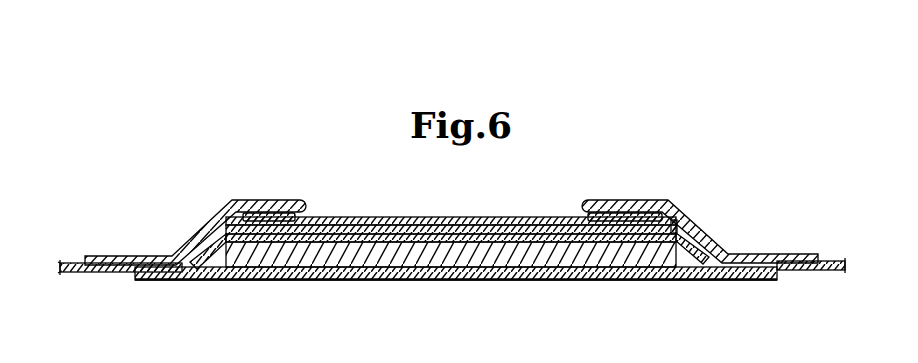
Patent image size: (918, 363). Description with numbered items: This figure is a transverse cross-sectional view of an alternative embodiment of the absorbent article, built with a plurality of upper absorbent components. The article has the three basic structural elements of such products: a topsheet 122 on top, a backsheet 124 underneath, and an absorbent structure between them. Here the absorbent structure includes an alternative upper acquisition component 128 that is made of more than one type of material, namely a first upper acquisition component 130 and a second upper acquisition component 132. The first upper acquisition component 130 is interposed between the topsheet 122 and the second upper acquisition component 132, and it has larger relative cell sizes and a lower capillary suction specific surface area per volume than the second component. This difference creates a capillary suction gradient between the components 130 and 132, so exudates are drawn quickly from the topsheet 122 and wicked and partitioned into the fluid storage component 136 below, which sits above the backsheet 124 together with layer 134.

The topsheet 122 is at (553, 217).
The backsheet 124 is at (510, 272).
The upper acquisition component 128 is at (699, 224).
The first upper acquisition component 130 is at (366, 217).
The second upper acquisition component 132 is at (487, 217).
The release liner 134 is at (358, 271).
The fluid storage component 136 is at (604, 252).